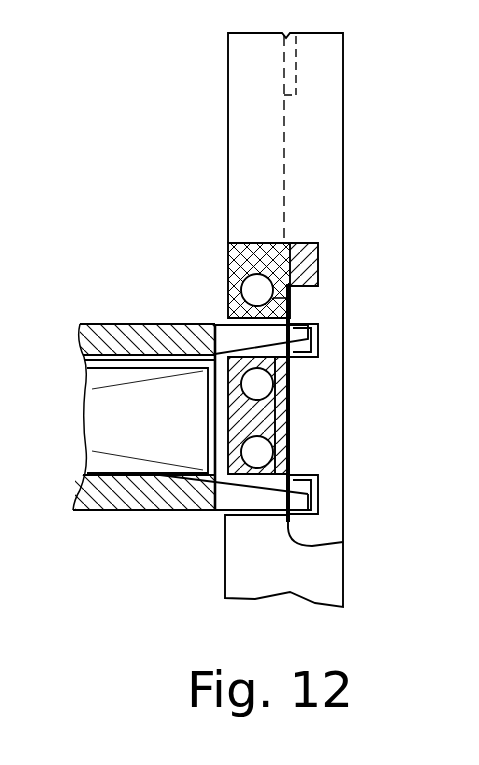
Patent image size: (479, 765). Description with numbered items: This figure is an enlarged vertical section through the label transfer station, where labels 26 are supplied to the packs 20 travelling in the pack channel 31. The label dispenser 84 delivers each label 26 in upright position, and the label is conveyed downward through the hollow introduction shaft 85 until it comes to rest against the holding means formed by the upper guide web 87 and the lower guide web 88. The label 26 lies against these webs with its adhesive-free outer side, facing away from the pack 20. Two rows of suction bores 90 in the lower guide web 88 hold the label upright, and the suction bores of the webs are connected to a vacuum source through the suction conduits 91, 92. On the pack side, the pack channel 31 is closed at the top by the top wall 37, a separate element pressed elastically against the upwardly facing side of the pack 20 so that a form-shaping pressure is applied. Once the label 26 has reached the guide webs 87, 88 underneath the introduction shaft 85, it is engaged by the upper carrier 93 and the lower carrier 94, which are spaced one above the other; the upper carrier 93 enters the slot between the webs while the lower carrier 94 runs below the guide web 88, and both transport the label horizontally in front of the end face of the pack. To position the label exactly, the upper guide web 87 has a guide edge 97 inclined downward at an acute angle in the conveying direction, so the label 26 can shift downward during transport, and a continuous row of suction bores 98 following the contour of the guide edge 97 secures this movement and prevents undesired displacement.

The introduction shaft 85 is at (344, 100).
The label dispenser 84 is at (370, 163).
The upper guide web 87 is at (302, 270).
The row of suction bores 98 is at (290, 298).
The guide edge 97 is at (288, 282).
The suction conduit 91 is at (262, 288).
The upper carrier 93 is at (232, 337).
The suction bores 90 is at (307, 345).
The suction conduit 92 is at (262, 386).
The lower guide web 88 is at (272, 420).
The label 26 is at (343, 542).
The top wall 37 is at (90, 343).
The pack 20 is at (120, 420).
The pack channel 31 is at (83, 528).
The lower carrier 94 is at (236, 494).